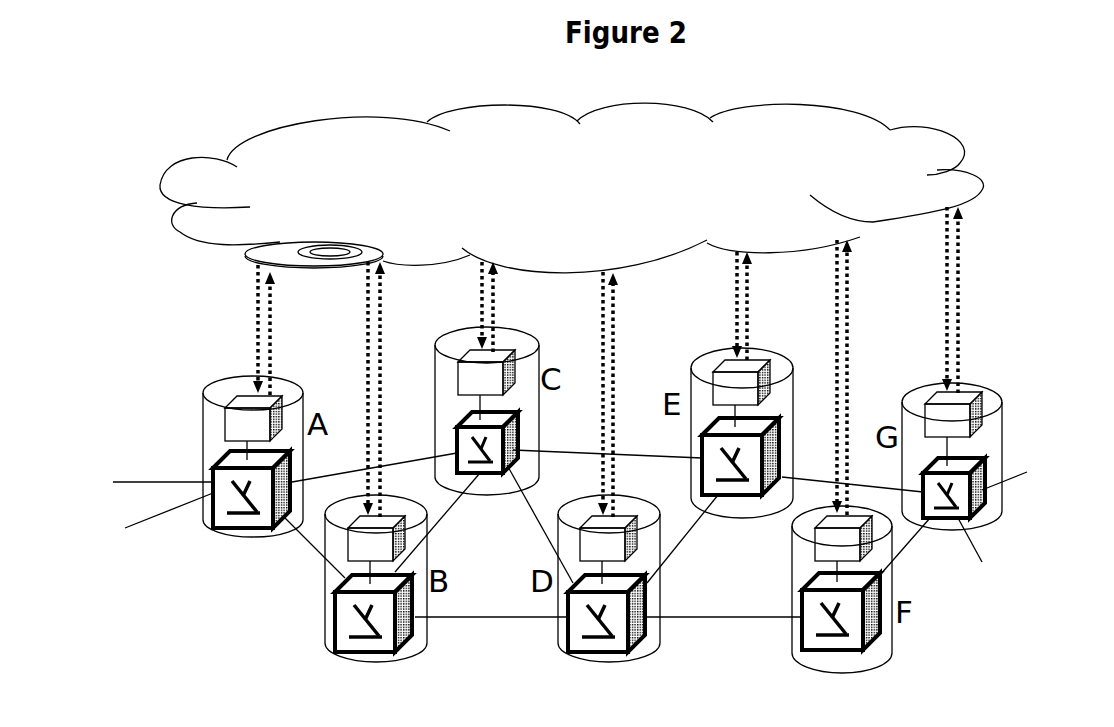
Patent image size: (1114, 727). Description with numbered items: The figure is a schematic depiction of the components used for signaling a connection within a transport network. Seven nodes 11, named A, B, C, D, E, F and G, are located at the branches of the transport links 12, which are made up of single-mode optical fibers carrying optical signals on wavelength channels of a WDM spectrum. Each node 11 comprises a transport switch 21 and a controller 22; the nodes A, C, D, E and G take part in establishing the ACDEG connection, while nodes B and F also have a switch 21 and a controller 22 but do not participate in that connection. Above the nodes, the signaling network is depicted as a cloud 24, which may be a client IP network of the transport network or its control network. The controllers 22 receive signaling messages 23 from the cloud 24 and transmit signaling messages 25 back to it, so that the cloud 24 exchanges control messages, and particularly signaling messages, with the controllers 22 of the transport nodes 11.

The node 11 is at (250, 538).
The transport link 12 is at (748, 617).
The transport switch 21 is at (213, 470).
The controller 22 is at (225, 423).
The signaling message 23 is at (258, 348).
The cloud 24 is at (368, 115).
The signaling message 25 is at (268, 358).